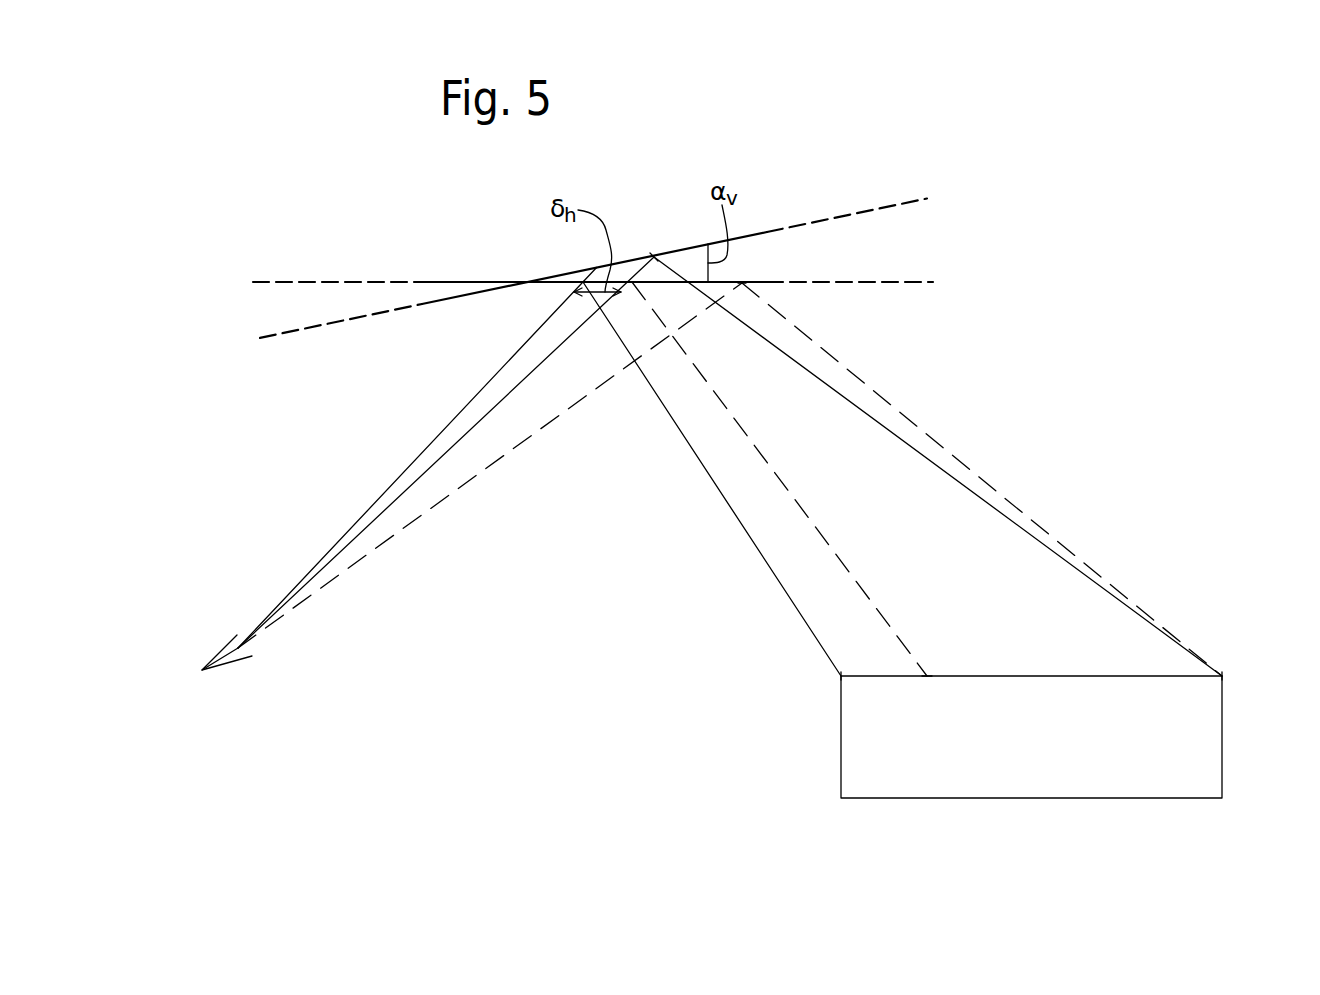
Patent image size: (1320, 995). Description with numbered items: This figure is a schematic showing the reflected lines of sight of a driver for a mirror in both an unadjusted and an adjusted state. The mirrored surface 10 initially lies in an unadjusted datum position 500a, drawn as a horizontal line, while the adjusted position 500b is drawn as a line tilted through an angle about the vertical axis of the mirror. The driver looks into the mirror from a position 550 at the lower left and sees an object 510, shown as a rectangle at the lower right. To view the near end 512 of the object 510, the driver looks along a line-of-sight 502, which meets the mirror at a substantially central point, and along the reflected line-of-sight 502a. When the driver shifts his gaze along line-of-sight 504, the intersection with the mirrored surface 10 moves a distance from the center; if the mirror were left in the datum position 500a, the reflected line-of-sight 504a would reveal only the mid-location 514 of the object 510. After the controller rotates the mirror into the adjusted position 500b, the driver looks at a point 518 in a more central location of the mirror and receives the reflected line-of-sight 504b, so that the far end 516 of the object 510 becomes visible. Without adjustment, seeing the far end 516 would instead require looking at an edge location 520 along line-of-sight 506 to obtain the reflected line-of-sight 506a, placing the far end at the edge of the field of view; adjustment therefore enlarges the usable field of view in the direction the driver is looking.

The mirrored surface 10 is at (462, 281).
The unadjusted datum position 500a is at (907, 281).
The adjusted position 500b is at (905, 207).
The line-of-sight 502 is at (395, 478).
The reflected line-of-sight 502a is at (765, 562).
The line-of-sight 504 is at (453, 445).
The reflected line-of-sight 504a is at (805, 505).
The reflected line-of-sight 504b is at (887, 427).
The line-of-sight 506 is at (560, 413).
The reflected line-of-sight 506a is at (1027, 517).
The object 510 is at (841, 752).
The near end 512 is at (841, 676).
The mid-location 514 is at (927, 676).
The far end 516 is at (1222, 676).
The point on the mirror 518 is at (653, 258).
The edge location 520 is at (742, 282).
The driver position 550 is at (227, 650).